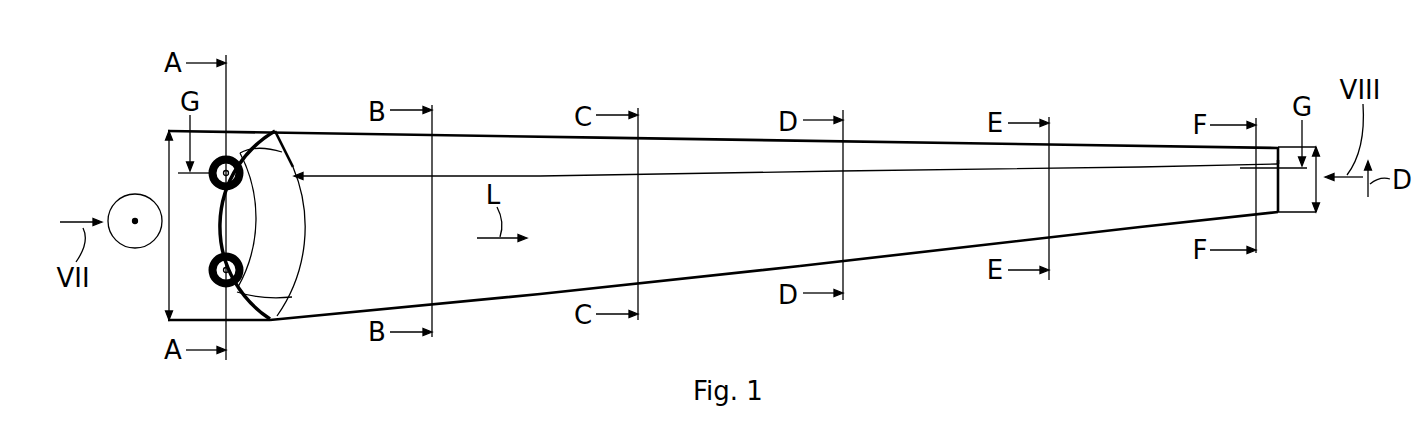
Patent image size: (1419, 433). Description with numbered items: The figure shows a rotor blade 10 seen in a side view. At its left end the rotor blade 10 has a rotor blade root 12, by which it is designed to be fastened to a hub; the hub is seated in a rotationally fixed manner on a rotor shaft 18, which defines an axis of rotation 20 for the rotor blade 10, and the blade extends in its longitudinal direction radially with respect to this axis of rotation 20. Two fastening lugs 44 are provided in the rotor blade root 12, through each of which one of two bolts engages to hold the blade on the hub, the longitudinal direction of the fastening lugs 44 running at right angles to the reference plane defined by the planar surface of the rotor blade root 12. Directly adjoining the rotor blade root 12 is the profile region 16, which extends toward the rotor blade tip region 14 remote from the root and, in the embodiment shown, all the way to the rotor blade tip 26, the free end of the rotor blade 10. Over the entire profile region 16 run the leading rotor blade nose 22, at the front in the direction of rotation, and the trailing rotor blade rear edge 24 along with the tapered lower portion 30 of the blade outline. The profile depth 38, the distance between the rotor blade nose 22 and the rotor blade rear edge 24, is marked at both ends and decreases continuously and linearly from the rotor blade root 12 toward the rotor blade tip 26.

The rotor blade 10 is at (729, 132).
The rotor blade root 12 is at (268, 170).
The rotor blade tip region 14 is at (1263, 155).
The profile region 16 is at (328, 153).
The rotor shaft 18 is at (112, 205).
The axis of rotation 20 is at (135, 218).
The rotor blade nose 22 is at (513, 136).
The rotor blade rear edge 24 is at (725, 262).
The rotor blade tip 26 is at (1282, 188).
The tapered lower portion 30 is at (925, 230).
The profile depth 38 is at (168, 138).
The fastening lug 44 is at (213, 289).